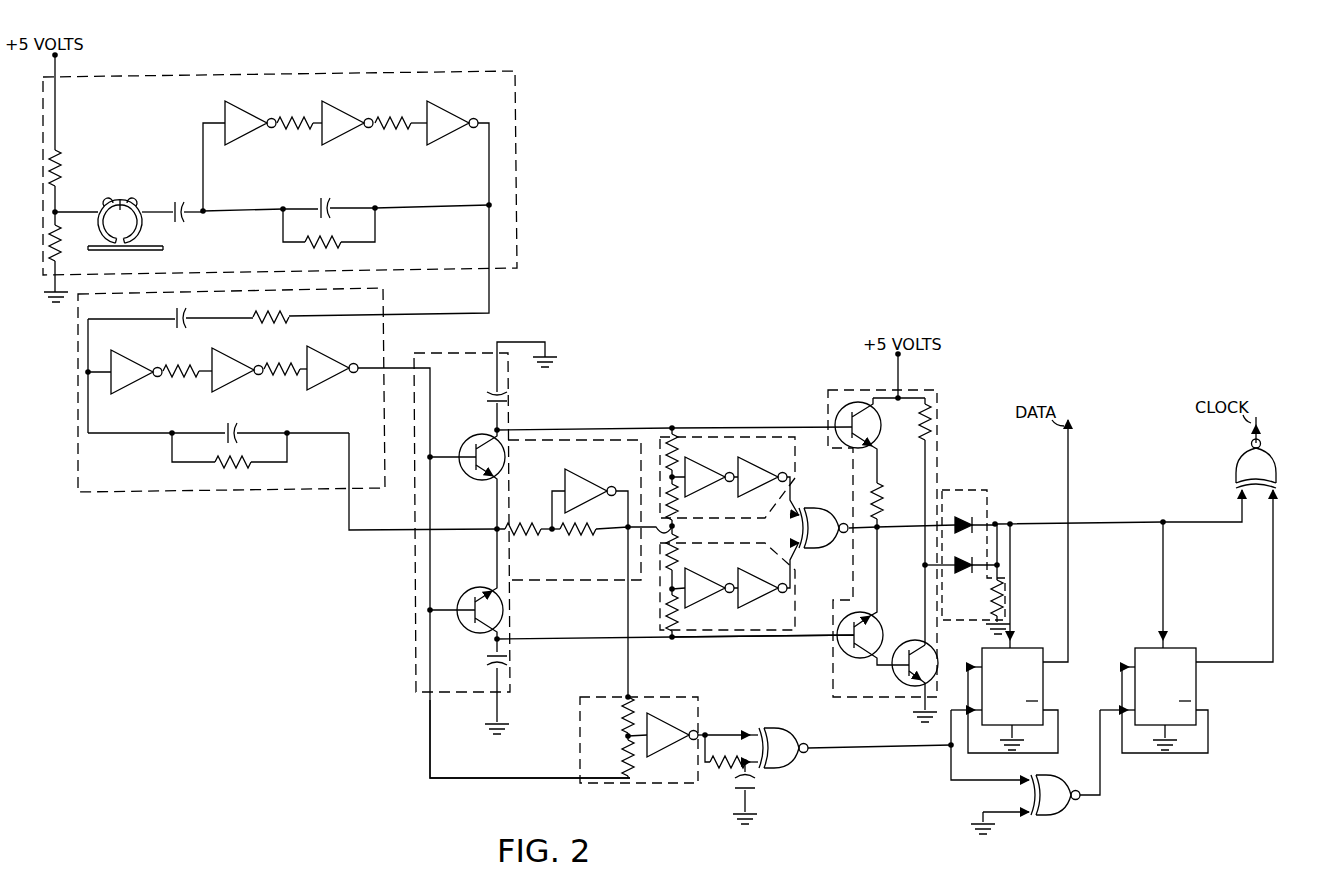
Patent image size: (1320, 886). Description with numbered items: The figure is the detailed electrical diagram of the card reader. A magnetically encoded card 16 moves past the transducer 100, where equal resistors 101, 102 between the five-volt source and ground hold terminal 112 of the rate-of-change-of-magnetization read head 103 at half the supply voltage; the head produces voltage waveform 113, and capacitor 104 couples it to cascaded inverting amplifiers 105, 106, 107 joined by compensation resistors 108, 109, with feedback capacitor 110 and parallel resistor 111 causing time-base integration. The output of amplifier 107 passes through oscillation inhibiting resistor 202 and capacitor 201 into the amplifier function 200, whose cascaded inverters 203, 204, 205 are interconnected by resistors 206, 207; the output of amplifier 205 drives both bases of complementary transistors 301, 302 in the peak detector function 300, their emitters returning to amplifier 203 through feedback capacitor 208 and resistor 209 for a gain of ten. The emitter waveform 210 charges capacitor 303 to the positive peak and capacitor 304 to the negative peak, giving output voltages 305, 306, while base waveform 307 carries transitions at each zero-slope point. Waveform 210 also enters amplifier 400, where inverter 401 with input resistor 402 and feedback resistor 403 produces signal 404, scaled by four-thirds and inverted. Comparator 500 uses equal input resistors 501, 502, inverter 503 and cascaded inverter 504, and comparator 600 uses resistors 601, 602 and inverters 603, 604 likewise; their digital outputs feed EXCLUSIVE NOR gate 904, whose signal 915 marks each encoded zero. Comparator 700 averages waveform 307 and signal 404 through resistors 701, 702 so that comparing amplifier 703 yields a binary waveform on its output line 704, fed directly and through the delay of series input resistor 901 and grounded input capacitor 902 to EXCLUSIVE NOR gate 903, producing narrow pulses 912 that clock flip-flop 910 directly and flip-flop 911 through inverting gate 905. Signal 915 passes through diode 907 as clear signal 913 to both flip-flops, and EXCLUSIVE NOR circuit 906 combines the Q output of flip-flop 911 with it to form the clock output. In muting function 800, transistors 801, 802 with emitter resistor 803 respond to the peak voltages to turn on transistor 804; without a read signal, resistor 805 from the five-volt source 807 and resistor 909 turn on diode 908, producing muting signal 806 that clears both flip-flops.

The magnetically encoded card 16 is at (158, 246).
The transducer 100 is at (256, 69).
The resistor 101 is at (61, 166).
The resistor 102 is at (61, 272).
The rate-of-change-of-magnetization read head 103 is at (128, 198).
The capacitor 104 is at (188, 206).
The inverting amplifier 105 is at (233, 106).
The inverting amplifier 106 is at (328, 104).
The inverting amplifier 107 is at (430, 104).
The resistor 108 is at (302, 128).
The resistor 109 is at (403, 128).
The capacitor 110 is at (318, 190).
The resistor 111 is at (322, 244).
The terminal 112 is at (57, 213).
The voltage waveform 113 is at (158, 208).
The amplifier function 200 is at (78, 388).
The capacitor 201 is at (174, 318).
The oscillation inhibiting resistor 202 is at (253, 316).
The inverting amplifier 203 is at (118, 347).
The inverting amplifier 204 is at (218, 347).
The inverting amplifier 205 is at (310, 346).
The resistor 206 is at (186, 378).
The resistor 207 is at (294, 376).
The capacitor 208 is at (221, 428).
The resistor 209 is at (234, 468).
The waveform 210 is at (351, 529).
The peak detector function 300 is at (468, 345).
The transistor 301 is at (476, 431).
The transistor 302 is at (479, 586).
The capacitor 303 is at (484, 393).
The capacitor 304 is at (488, 659).
The output voltage 305 is at (634, 425).
The output voltage 306 is at (600, 645).
The waveform 307 is at (429, 726).
The amplifier 400 is at (588, 580).
The inverter 401 is at (575, 476).
The resistor 402 is at (533, 530).
The feedback resistor 403 is at (593, 530).
The output signal 404 is at (673, 526).
The comparator 500 is at (797, 486).
The input resistor 501 is at (673, 444).
The input resistor 502 is at (673, 503).
The inverter 503 is at (695, 488).
The cascaded inverter 504 is at (738, 456).
The comparator 600 is at (797, 596).
The input resistor 601 is at (673, 548).
The input resistor 602 is at (673, 615).
The inverter 603 is at (695, 599).
The cascaded inverter 604 is at (728, 568).
The comparator 700 is at (642, 695).
The resistor 701 is at (626, 718).
The resistor 702 is at (625, 752).
The comparing amplifier 703 is at (647, 719).
The line 704 is at (700, 735).
The muting function 800 is at (910, 386).
The transistor 801 is at (879, 410).
The transistor 802 is at (875, 612).
The resistor 803 is at (879, 488).
The transistor 804 is at (897, 645).
The resistor 805 is at (925, 435).
The muting signal 806 is at (926, 565).
The 5-volt source 807 is at (892, 360).
The series input resistor 901 is at (724, 768).
The grounded input capacitor 902 is at (756, 788).
The EXCLUSIVE NOR gate 903 is at (767, 729).
The EXCLUSIVE NOR gate 904 is at (845, 518).
The inverting gate 905 is at (1042, 780).
The EXCLUSIVE NOR circuit 906 is at (1242, 470).
The diode 907 is at (955, 524).
The diode 908 is at (955, 577).
The resistor 909 is at (995, 606).
The flip-flop 910 is at (1014, 648).
The flip-flop 911 is at (1175, 648).
The waveform 912 is at (889, 745).
The signal 913 is at (1146, 515).
The signal 915 is at (856, 534).